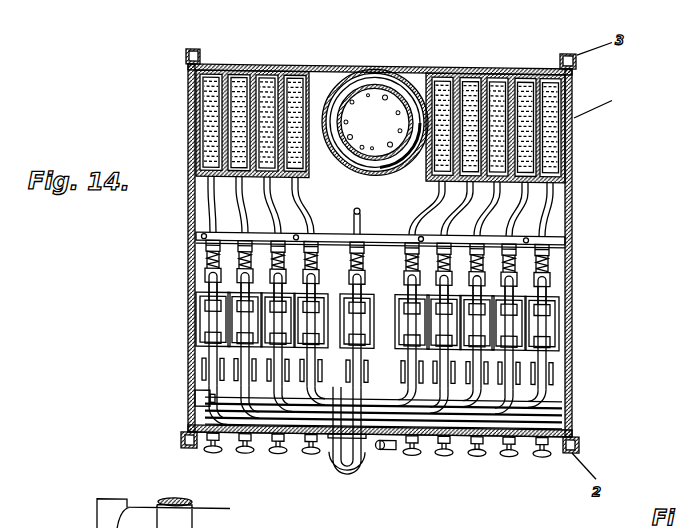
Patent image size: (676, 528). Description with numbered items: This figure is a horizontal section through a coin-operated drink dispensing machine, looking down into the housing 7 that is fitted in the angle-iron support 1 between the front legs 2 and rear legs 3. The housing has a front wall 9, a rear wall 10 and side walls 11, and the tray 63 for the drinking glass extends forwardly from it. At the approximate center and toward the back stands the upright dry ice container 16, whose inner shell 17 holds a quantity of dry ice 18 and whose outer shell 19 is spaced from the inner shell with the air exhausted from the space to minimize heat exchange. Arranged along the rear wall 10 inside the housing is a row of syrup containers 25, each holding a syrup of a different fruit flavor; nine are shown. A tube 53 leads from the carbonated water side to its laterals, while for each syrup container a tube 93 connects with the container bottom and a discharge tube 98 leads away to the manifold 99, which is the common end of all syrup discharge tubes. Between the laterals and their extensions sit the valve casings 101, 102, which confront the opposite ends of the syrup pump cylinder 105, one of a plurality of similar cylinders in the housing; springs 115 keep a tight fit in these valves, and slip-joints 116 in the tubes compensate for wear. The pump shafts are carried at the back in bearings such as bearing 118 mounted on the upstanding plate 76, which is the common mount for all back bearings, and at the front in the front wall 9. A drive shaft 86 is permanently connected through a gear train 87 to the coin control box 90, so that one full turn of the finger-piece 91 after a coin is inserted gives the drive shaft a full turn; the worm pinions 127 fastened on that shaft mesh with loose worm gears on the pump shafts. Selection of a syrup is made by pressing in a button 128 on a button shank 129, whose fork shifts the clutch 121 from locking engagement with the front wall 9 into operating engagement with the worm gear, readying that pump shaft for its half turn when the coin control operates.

The support 1 is at (388, 250).
The front legs 2 is at (184, 441).
The rear legs 3 is at (199, 50).
The housing 7 is at (186, 419).
The front wall 9 is at (200, 434).
The rear wall 10 is at (252, 101).
The side walls 11 is at (190, 88).
The dry ice container 16 is at (385, 274).
The inner shell 17 is at (365, 92).
The dry ice 18 is at (387, 80).
The outer shell 19 is at (408, 84).
The syrup containers 25 is at (255, 72).
The tube 53 is at (354, 207).
The tray 63 is at (366, 466).
The plate 76 is at (200, 234).
The drive shaft 86 is at (198, 392).
The gear train 87 is at (452, 448).
The coin control box 90 is at (420, 448).
The finger-piece 91 is at (390, 446).
The tube 93 is at (240, 190).
The discharge tube 98 is at (200, 290).
The manifold 99 is at (98, 526).
The valve casing 101 is at (205, 273).
The valve casing 102 is at (232, 370).
The pump cylinder 105 is at (238, 336).
The springs 115 is at (207, 259).
The slip-joints 116 is at (236, 306).
The bearing 118 is at (206, 243).
The clutch 121 is at (240, 425).
The worm pinion 127 is at (230, 384).
The button 128 is at (252, 448).
The button shank 129 is at (247, 452).